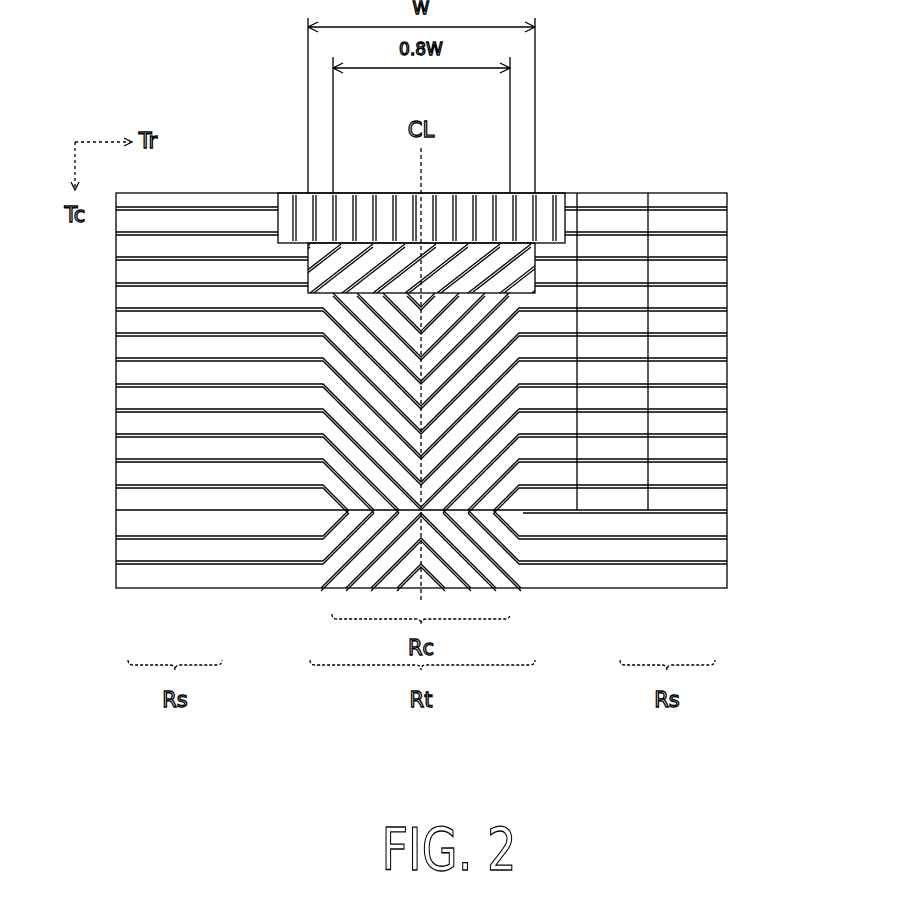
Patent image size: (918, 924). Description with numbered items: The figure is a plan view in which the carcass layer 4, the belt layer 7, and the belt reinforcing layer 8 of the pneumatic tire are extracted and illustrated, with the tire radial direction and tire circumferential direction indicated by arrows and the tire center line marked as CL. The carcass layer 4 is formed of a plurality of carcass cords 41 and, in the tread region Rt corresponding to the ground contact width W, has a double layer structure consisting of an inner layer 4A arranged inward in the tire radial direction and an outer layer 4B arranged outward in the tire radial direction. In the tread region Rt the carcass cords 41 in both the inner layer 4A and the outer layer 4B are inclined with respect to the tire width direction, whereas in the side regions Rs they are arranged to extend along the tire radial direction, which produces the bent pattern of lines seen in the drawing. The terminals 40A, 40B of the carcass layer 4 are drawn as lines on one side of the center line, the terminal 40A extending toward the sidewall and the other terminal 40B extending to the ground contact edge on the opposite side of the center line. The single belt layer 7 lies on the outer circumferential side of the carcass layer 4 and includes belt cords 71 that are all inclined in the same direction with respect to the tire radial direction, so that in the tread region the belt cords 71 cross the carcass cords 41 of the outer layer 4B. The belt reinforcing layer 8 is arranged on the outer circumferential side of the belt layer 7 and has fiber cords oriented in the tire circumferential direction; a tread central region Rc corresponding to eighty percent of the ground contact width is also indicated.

The carcass layer 4 is at (800, 455).
The inner layer 4A is at (627, 397).
The outer layer 4B is at (697, 345).
The carcass cords 41 is at (663, 307).
The terminal 40A is at (647, 252).
The terminal 40B is at (580, 250).
The belt layer 7 is at (367, 262).
The belt cords 71 is at (463, 270).
The belt reinforcing layer 8 is at (283, 222).